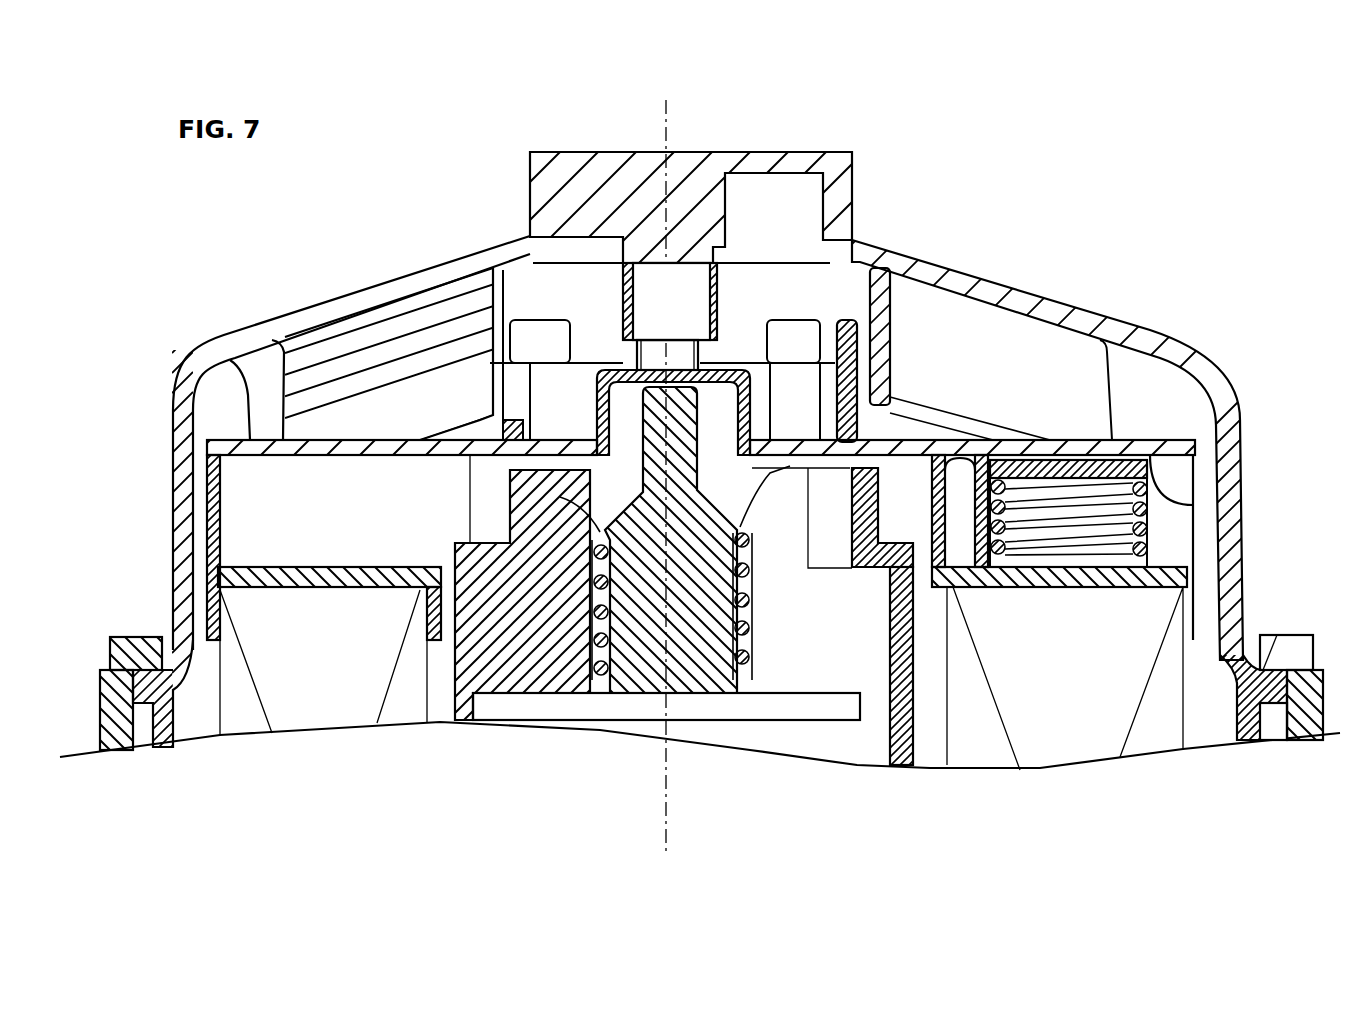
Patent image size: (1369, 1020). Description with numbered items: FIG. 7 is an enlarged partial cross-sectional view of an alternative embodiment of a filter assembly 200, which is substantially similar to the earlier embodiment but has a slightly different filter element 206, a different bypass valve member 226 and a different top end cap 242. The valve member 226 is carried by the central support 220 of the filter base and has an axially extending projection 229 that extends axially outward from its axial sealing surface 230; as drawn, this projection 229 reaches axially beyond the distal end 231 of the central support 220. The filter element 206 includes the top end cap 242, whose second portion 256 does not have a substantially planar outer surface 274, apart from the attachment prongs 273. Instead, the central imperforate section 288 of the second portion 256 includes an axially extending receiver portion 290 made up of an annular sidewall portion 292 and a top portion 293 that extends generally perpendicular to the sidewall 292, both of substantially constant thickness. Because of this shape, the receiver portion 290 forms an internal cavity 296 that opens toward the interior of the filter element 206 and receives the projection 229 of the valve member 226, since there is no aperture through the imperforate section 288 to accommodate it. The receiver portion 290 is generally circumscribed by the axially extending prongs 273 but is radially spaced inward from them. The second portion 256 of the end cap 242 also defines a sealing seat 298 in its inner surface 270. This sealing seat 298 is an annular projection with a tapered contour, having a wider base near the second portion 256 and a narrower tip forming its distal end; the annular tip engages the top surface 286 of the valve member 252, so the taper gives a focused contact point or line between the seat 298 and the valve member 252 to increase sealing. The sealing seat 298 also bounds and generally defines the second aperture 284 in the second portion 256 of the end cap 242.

The filter assembly 200 is at (1065, 98).
The filter element 206 is at (982, 350).
The central support 220 is at (890, 722).
The bypass valve member 226 is at (697, 690).
The axially extending projection 229 is at (595, 405).
The axial sealing surface 230 is at (560, 490).
The distal end 231 is at (862, 468).
The top end cap 242 is at (1192, 392).
The valve member 252 is at (1157, 517).
The second portion 256 is at (250, 438).
The inner surface 270 is at (1157, 478).
The attachment prongs 273 is at (848, 325).
The outer surface 274 is at (493, 440).
The second aperture 284 is at (1040, 412).
The top surface 286 is at (1078, 467).
The central imperforate section 288 is at (773, 440).
The axially extending receiver portion 290 is at (583, 343).
The annular sidewall portion 292 is at (590, 400).
The top portion 293 is at (623, 370).
The internal cavity 296 is at (717, 403).
The sealing seat 298 is at (1123, 447).